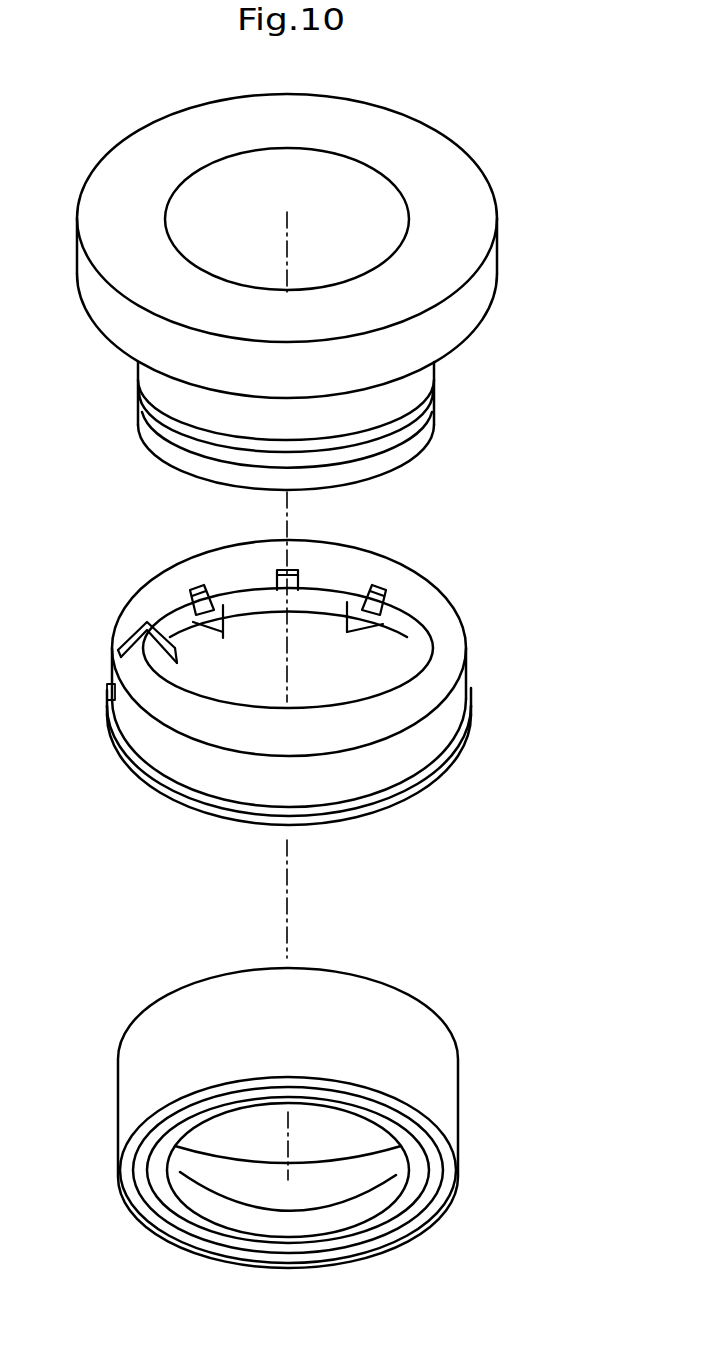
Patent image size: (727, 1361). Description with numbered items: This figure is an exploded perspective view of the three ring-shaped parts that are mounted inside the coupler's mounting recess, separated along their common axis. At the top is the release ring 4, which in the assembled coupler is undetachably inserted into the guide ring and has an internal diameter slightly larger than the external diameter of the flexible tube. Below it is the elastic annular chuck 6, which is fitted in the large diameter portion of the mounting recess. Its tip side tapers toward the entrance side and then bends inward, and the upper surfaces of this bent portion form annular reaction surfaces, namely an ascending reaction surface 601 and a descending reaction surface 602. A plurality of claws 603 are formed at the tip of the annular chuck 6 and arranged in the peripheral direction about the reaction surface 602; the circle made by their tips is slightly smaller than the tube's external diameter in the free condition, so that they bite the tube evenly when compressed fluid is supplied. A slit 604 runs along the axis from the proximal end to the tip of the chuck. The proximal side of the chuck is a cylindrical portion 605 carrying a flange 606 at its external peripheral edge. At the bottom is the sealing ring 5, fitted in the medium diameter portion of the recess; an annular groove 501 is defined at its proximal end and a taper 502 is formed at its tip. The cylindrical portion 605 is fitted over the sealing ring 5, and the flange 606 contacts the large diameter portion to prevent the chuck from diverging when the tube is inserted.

The release ring 4 is at (490, 281).
The sealing ring 5 is at (453, 1083).
The annular chuck 6 is at (497, 547).
The annular groove 501 is at (425, 1195).
The taper 502 is at (338, 1178).
The ascending reaction surface 601 is at (457, 643).
The descending reaction surface 602 is at (400, 587).
The claws 603 is at (288, 620).
The slit 604 is at (132, 630).
The cylindrical portion 605 is at (460, 710).
The flange 606 is at (437, 773).